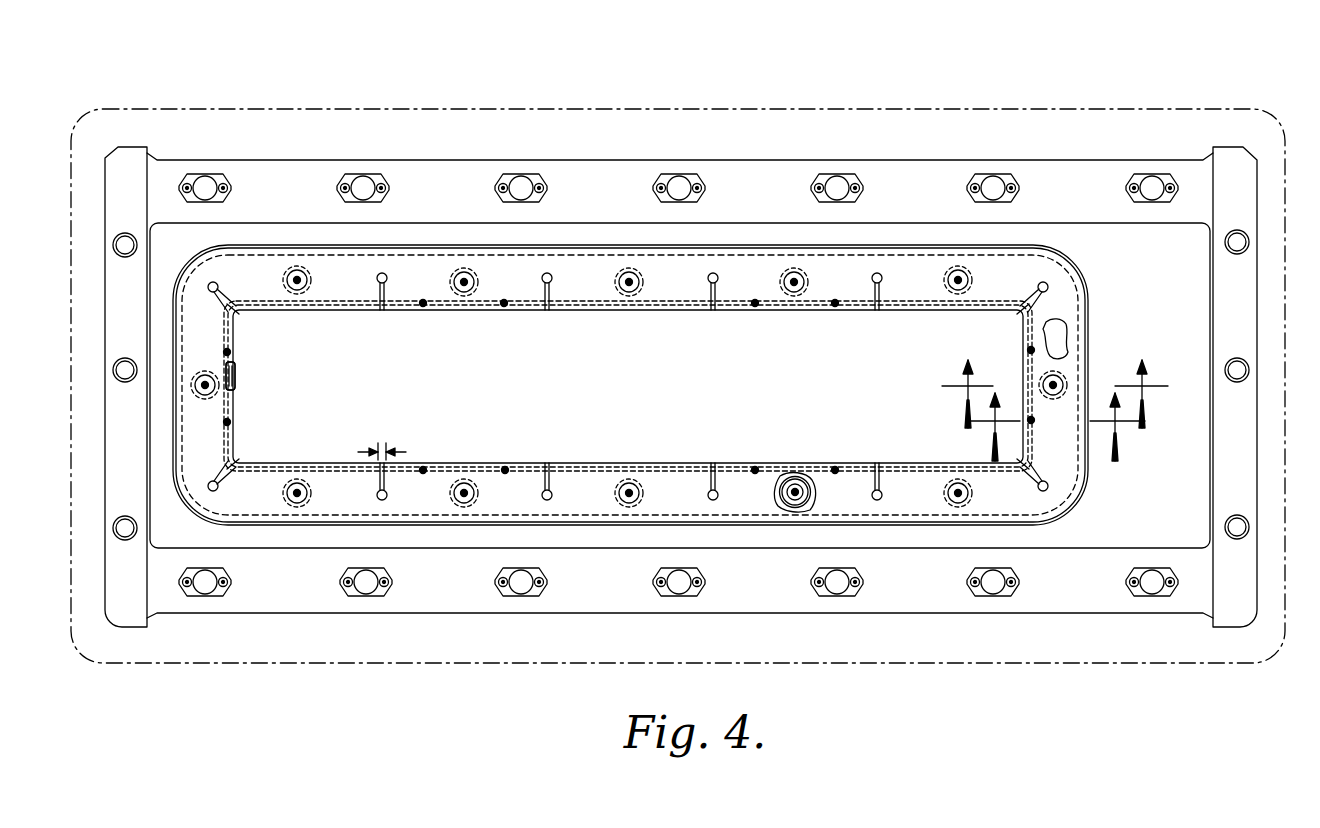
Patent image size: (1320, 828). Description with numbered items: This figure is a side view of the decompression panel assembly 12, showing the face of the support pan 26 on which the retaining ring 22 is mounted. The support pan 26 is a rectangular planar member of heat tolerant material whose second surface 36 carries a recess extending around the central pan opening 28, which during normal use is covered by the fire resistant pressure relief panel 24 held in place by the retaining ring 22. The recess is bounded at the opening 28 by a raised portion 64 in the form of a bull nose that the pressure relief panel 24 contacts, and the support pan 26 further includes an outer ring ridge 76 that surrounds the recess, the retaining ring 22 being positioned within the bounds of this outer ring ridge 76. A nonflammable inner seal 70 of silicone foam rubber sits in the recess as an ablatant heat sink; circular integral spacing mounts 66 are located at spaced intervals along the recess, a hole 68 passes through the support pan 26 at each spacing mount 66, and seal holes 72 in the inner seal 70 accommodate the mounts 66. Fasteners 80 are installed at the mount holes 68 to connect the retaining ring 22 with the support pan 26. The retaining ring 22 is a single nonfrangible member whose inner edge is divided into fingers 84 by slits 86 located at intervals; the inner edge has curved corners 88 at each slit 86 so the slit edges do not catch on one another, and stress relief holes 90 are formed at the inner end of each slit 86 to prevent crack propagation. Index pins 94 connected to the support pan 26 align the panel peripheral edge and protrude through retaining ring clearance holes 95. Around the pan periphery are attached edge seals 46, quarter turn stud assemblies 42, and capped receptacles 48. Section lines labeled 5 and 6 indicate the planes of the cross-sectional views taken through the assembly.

The decompression panel assembly 12 is at (453, 92).
The support pan 26 is at (1148, 160).
The second surface 36 is at (295, 600).
The edge seals 46 is at (115, 612).
The quarter turn stud assemblies 42 is at (118, 240).
The capped receptacles 48 is at (205, 174).
The retaining ring 22 is at (1027, 508).
The outer ring ridge 76 is at (915, 246).
The fire resistant pressure relief panel 24 is at (670, 389).
The fingers 84 is at (582, 287).
The seal holes 72 is at (643, 290).
The fasteners 80 is at (464, 488).
The curved corners 88 is at (382, 308).
The stress relief holes 90 is at (553, 496).
The slits 86 is at (388, 448).
The retaining ring clearance holes 95 is at (506, 467).
The index pins 94 is at (754, 468).
The inner seal 70 is at (1046, 329).
The raised portion 64 is at (236, 366).
The opening 28 is at (236, 383).
The integral spacing mounts 66 is at (802, 480).
The hole 68 is at (783, 478).
The section line 5 is at (1055, 394).
The section line 6 is at (1056, 427).